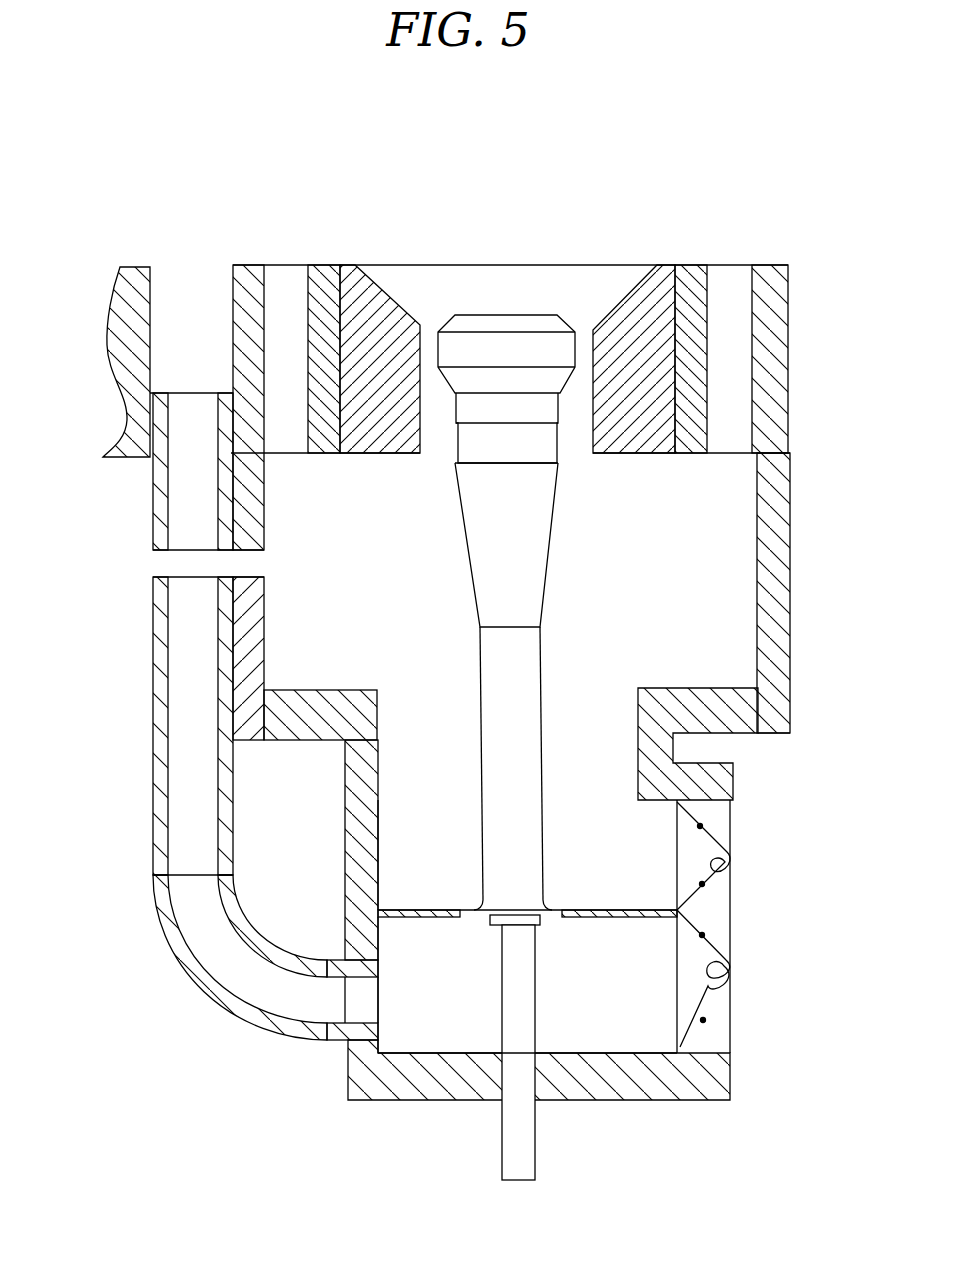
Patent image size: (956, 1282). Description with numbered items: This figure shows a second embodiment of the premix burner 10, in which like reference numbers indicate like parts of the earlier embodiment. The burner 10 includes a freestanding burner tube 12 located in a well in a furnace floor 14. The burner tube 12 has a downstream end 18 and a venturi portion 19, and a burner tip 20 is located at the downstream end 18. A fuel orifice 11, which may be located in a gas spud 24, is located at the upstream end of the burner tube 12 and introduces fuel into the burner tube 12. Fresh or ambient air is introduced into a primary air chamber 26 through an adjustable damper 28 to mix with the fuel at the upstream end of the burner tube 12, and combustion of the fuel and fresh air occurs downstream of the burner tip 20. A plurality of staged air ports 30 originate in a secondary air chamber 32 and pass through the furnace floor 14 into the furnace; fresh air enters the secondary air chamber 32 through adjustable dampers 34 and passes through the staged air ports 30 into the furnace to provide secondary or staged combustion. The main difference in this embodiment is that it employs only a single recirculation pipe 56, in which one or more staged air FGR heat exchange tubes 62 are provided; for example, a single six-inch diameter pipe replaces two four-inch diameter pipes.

The burner 10 is at (598, 230).
The fuel orifice 11 is at (507, 912).
The burner tube 12 is at (542, 700).
The furnace floor 14 is at (130, 270).
The downstream end 18 is at (473, 314).
The venturi portion 19 is at (552, 542).
The burner tip 20 is at (505, 314).
The gas spud 24 is at (487, 925).
The primary air chamber 26 is at (597, 992).
The adjustable damper 28 is at (715, 977).
The staged air ports 30 is at (268, 314).
The secondary air chamber 32 is at (652, 649).
The adjustable dampers 34 is at (718, 858).
The single recirculation pipe 56 is at (190, 790).
The staged air FGR heat exchange tubes 62 is at (177, 562).